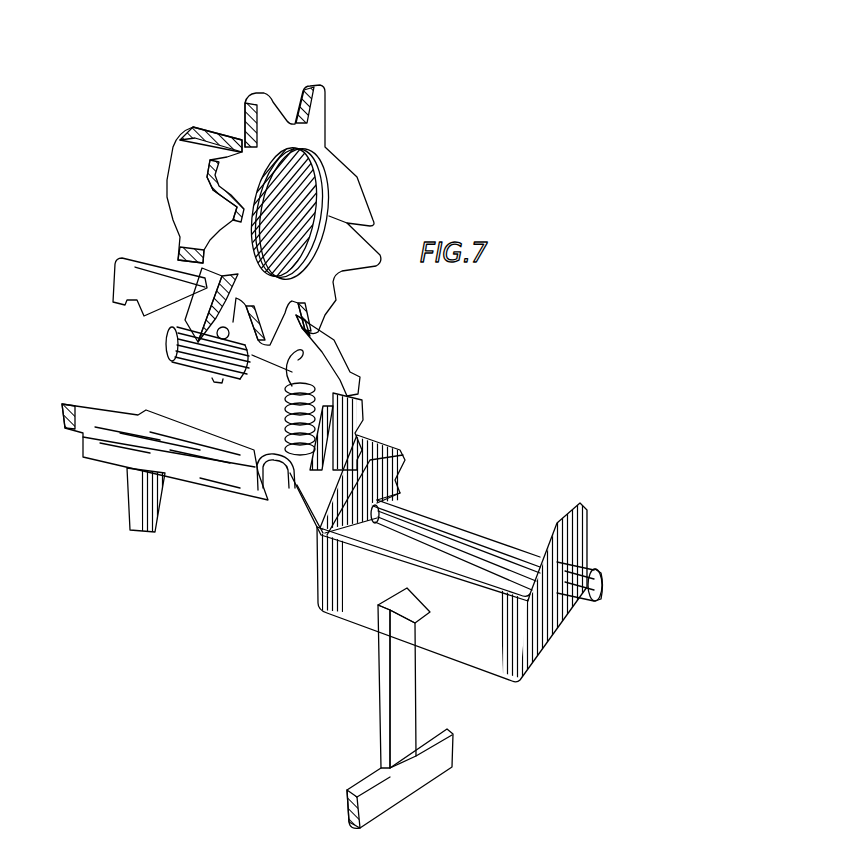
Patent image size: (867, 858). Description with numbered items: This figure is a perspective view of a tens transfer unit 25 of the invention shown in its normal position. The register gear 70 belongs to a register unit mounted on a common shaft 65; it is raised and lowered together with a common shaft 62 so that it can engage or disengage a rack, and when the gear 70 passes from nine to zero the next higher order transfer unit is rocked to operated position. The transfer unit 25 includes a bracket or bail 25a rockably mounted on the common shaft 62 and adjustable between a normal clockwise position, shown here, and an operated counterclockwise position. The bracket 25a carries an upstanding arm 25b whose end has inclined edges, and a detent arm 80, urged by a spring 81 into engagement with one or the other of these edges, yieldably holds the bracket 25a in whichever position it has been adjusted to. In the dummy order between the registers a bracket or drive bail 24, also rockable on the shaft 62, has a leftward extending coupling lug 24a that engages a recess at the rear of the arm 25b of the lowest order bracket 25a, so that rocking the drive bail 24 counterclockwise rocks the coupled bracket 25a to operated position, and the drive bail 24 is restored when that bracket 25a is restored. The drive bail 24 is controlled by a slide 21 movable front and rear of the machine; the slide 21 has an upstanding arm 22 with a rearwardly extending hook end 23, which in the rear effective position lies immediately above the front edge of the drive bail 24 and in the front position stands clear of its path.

The slide 21 is at (437, 750).
The upstanding arm 22 is at (400, 703).
The hook end 23 is at (378, 622).
The drive bail 24 is at (323, 580).
The coupling lug 24a is at (401, 449).
The tens transfer unit 25 is at (183, 485).
The bracket 25a is at (240, 483).
The upstanding arm 25b is at (352, 415).
The common shaft 62 is at (493, 558).
The common shaft 65 is at (183, 175).
The register gear 70 is at (312, 113).
The detent arm 80 is at (308, 350).
The spring 81 is at (285, 401).